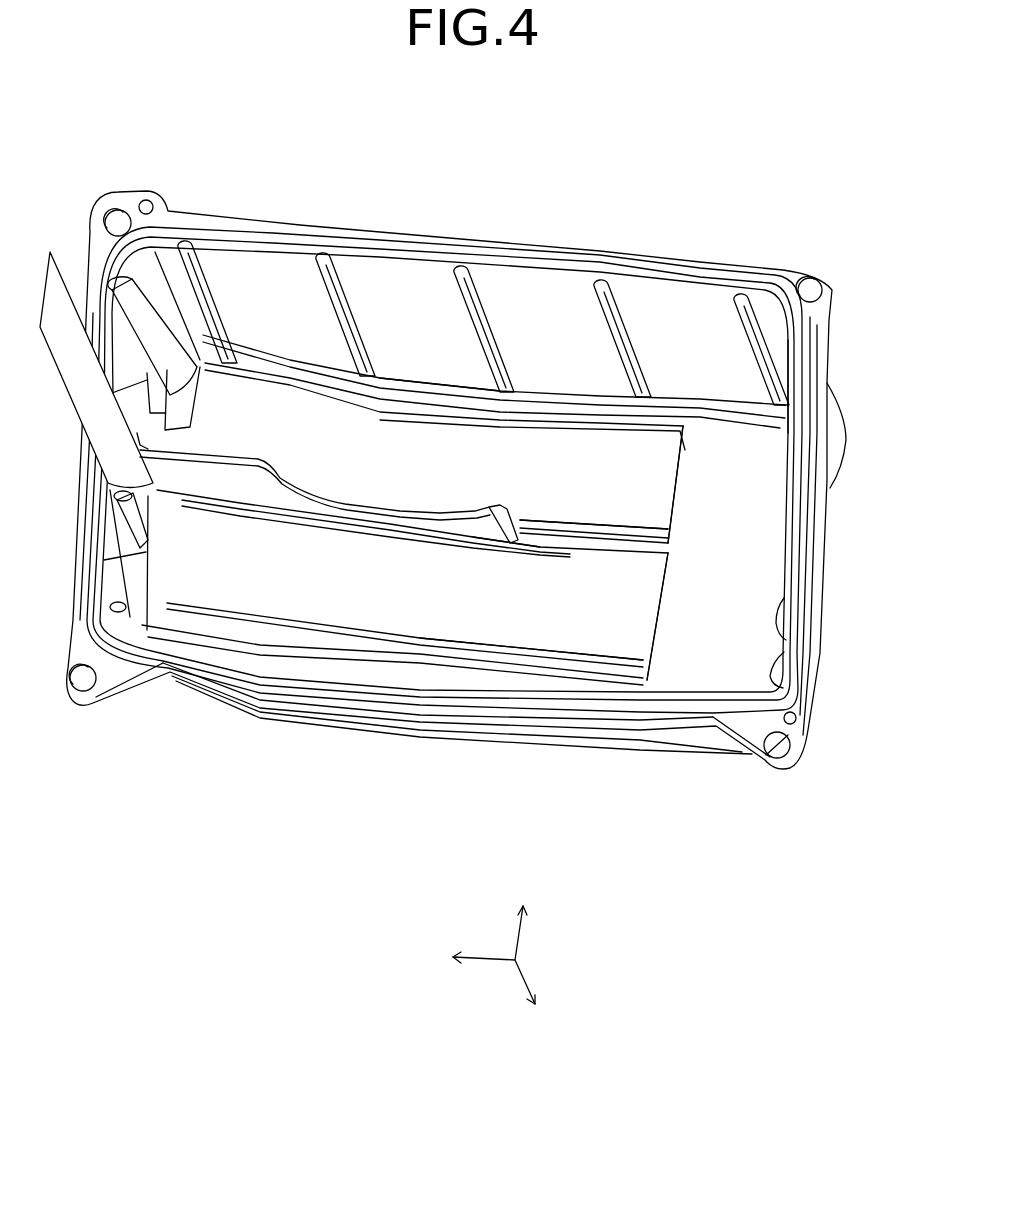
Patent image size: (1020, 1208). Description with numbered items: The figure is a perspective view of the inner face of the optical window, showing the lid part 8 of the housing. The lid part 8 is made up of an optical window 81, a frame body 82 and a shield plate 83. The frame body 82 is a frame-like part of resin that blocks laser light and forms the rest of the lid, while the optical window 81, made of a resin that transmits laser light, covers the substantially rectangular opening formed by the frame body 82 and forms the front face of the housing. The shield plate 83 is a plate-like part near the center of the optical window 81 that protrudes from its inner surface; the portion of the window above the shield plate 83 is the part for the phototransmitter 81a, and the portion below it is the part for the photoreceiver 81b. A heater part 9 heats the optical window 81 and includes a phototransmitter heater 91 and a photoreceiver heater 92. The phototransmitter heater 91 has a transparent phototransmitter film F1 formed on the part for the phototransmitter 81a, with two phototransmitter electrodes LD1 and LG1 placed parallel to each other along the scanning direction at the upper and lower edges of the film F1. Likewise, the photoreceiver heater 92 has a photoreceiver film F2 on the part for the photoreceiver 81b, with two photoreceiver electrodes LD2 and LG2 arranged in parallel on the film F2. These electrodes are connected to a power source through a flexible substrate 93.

The lid part 8 is at (581, 156).
The optical window 81 is at (737, 650).
The part for the phototransmitter 81a is at (748, 495).
The part for the photoreceiver 81b is at (748, 615).
The frame body 82 is at (423, 233).
The shield plate 83 is at (228, 440).
The heater part 9 is at (377, 845).
The phototransmitter heater 91 is at (350, 453).
The photoreceiver heater 92 is at (262, 572).
The flexible substrate 93 is at (140, 452).
The phototransmitter electrode LD1 is at (433, 425).
The photoreceiver electrode LD2 is at (440, 646).
The phototransmitter electrode LG1 is at (574, 527).
The photoreceiver electrode LG2 is at (487, 548).
The phototransmitter film F1 is at (657, 464).
The photoreceiver film F2 is at (640, 584).